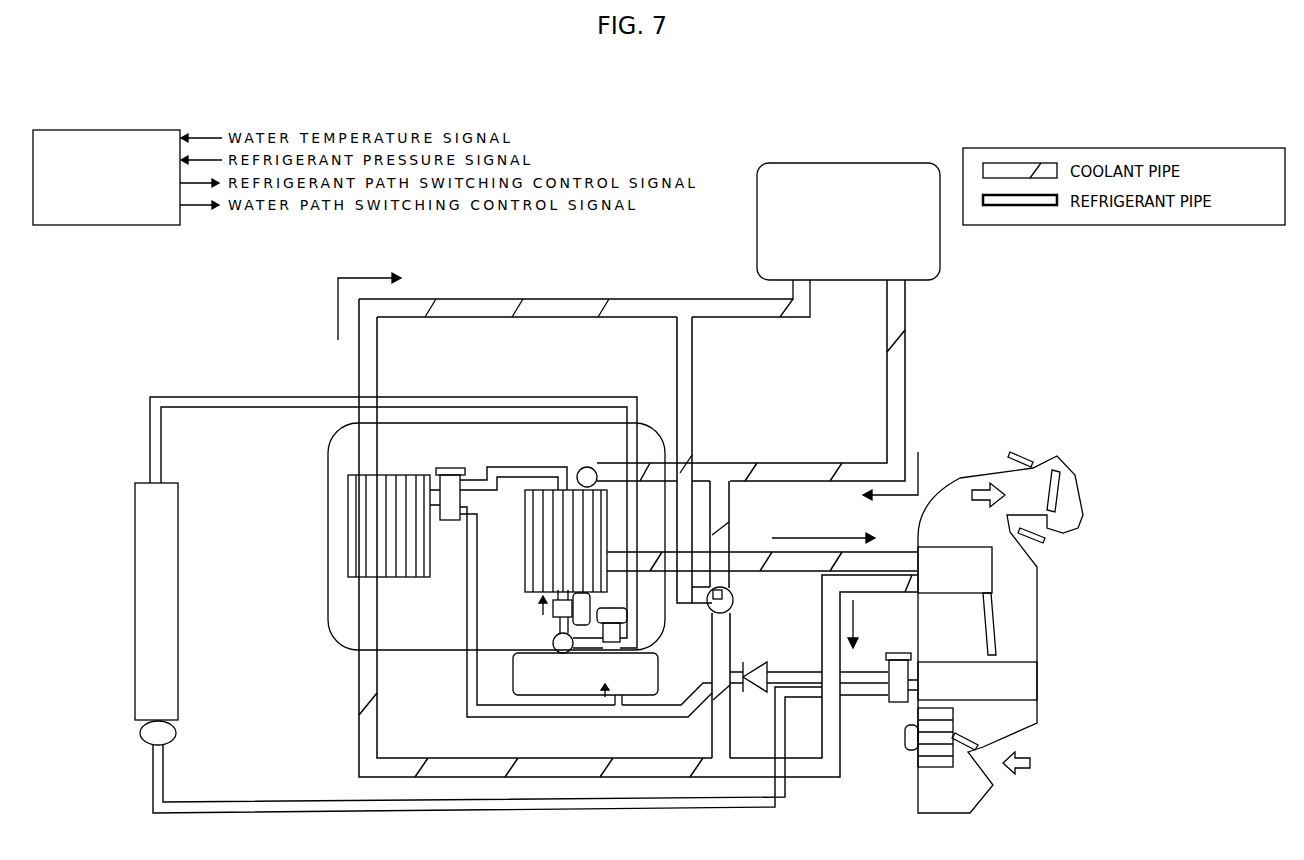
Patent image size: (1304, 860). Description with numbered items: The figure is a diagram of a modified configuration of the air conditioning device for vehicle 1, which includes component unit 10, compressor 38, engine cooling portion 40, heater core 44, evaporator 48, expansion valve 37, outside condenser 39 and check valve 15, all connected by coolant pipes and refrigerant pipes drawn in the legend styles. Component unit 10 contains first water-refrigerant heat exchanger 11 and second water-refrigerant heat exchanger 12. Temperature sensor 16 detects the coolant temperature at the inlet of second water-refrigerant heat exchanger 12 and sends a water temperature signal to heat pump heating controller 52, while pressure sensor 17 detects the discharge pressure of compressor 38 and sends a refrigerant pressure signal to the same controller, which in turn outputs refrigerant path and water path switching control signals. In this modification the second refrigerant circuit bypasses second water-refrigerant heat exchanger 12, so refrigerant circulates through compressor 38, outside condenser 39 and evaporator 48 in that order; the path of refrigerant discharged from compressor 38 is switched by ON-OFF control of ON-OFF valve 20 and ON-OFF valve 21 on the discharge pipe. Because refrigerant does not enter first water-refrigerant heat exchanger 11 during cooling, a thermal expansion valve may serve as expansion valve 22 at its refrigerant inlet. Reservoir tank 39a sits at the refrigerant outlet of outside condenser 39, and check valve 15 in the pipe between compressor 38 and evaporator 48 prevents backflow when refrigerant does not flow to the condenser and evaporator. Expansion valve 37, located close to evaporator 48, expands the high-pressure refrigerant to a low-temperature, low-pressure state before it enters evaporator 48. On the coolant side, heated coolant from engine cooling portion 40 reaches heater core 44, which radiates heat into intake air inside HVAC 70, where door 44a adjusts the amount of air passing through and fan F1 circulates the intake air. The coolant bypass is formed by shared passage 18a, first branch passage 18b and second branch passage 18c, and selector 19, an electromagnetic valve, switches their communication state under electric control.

The air conditioning device for vehicle 1 is at (740, 140).
The component unit 10 is at (328, 418).
The first water-refrigerant heat exchanger 11 is at (410, 580).
The second water-refrigerant heat exchanger 12 is at (540, 525).
The check valve 15 is at (760, 695).
The temperature sensor 16 is at (592, 467).
The pressure sensor 17 is at (553, 645).
The shared passage 18a is at (731, 630).
The first branch passage 18b is at (731, 518).
The second branch passage 18c is at (693, 420).
The selector 19 is at (734, 598).
The ON-OFF valve 20 is at (553, 615).
The ON-OFF valve 21 is at (628, 616).
The expansion valve 22 is at (450, 468).
The expansion valve 37 is at (890, 705).
The compressor 38 is at (659, 660).
The outside condenser 39 is at (178, 685).
The reservoir tank 39a is at (178, 733).
The engine cooling portion 40 is at (757, 220).
The heater core 44 is at (945, 545).
The door 44a is at (995, 625).
The evaporator 48 is at (1037, 690).
The heat pump heating controller 52 is at (112, 130).
The HVAC 70 is at (1038, 590).
The fan F1 is at (937, 773).